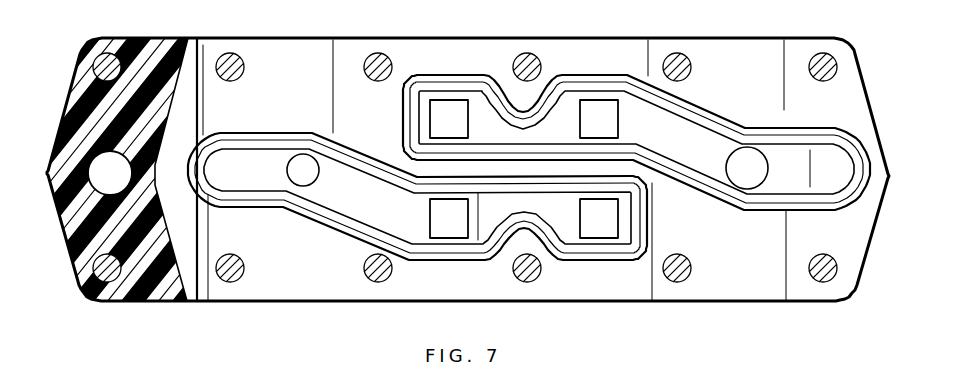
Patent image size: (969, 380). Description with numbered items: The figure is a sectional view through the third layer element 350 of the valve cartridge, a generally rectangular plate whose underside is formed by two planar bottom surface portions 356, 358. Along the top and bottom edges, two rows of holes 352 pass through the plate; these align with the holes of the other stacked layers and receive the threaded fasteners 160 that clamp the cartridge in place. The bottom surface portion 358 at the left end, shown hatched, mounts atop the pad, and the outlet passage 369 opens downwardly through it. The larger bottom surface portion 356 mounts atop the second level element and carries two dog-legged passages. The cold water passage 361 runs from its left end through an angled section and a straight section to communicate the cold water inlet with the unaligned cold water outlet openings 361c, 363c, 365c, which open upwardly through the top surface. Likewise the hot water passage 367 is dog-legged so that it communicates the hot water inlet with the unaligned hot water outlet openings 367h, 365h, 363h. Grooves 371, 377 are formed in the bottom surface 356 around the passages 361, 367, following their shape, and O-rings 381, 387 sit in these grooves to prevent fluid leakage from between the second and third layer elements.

The threaded fastener 160 is at (848, 318).
The third layer element 350 is at (880, 128).
The hole 352 is at (461, 179).
The bottom surface portion 356 is at (771, 264).
The bottom surface portion 358 is at (125, 240).
The cold water passage 361 is at (697, 155).
The cold water outlet opening 361c is at (760, 160).
The cold water outlet opening 363c is at (586, 112).
The hot water outlet opening 363h is at (587, 229).
The cold water outlet opening 365c is at (438, 112).
The hot water outlet opening 365h is at (438, 227).
The hot water passage 367 is at (387, 213).
The hot water outlet opening 367h is at (302, 162).
The outlet passage 369 is at (118, 184).
The groove 371 is at (724, 120).
The groove 377 is at (262, 210).
The O-ring 381 is at (692, 102).
The O-ring 387 is at (342, 232).